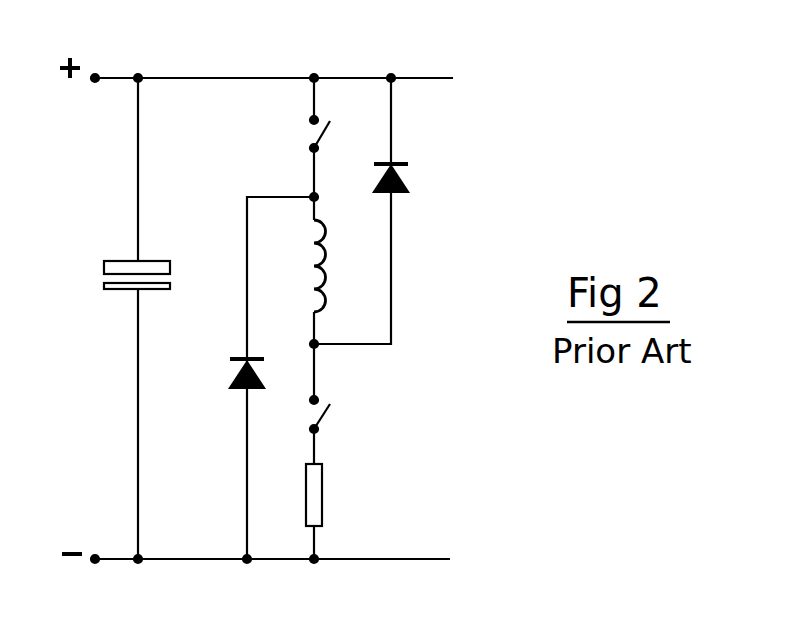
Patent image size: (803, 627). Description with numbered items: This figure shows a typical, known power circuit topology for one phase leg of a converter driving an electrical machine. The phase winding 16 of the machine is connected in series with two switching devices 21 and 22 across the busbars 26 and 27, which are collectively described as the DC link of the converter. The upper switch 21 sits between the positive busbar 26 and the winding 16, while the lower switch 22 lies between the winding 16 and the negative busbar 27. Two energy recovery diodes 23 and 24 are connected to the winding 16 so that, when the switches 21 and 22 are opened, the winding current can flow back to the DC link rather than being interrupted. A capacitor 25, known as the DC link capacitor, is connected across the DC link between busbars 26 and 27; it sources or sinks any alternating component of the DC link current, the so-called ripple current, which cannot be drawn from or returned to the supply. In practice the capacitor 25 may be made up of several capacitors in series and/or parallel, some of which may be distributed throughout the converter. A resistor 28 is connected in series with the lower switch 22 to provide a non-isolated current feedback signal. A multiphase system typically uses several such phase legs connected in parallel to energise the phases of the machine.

The phase winding 16 is at (333, 244).
The switching device 21 is at (310, 132).
The switching device 22 is at (330, 413).
The energy recovery diode 23 is at (412, 176).
The energy recovery diode 24 is at (228, 366).
The capacitor 25 is at (100, 277).
The busbar 26 is at (220, 78).
The busbar 27 is at (198, 560).
The resistor 28 is at (324, 493).